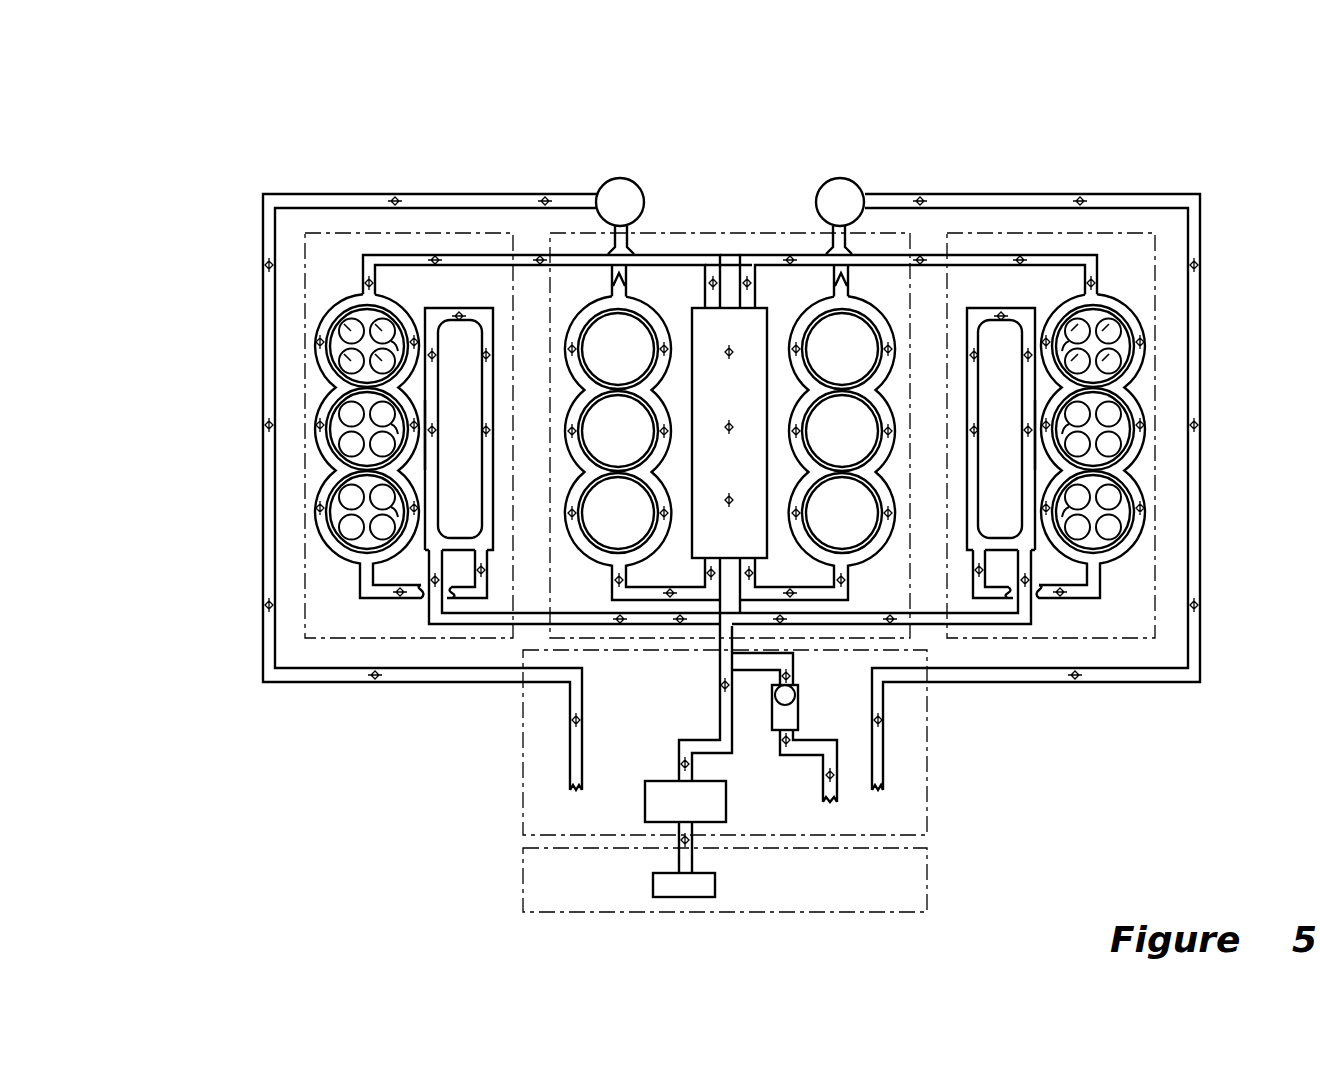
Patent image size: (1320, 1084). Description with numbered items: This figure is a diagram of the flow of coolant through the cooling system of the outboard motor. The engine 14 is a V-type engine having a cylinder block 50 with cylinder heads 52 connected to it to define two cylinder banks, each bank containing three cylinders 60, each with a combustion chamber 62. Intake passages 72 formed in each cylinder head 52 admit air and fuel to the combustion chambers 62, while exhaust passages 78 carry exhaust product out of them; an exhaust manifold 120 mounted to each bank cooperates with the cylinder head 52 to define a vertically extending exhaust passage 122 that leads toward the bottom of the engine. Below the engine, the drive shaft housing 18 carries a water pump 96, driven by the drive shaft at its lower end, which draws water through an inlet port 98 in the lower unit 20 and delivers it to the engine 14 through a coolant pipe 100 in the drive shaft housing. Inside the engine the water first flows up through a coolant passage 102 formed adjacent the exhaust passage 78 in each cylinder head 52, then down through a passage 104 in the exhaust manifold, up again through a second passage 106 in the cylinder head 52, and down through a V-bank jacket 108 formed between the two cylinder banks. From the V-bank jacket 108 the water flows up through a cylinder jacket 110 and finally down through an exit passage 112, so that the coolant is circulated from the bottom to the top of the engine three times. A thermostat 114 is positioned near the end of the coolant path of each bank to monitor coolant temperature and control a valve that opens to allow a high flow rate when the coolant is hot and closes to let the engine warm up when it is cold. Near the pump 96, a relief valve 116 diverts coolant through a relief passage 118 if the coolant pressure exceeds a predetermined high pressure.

The engine 14 is at (705, 233).
The drive shaft housing 18 is at (930, 790).
The lower unit 20 is at (930, 857).
The cylinder block 50 is at (740, 233).
The cylinder head 52 is at (320, 237).
The cylinder 60 is at (593, 337).
The combustion chamber 62 is at (320, 520).
The intake passage 72 is at (347, 363).
The exhaust passage 78 is at (388, 355).
The water pump 96 is at (655, 781).
The inlet port 98 is at (653, 880).
The coolant pipe 100 is at (719, 707).
The coolant passage 102 is at (425, 420).
The passage in the exhaust manifold 104 is at (493, 372).
The second passage 106 is at (320, 455).
The V-bank jacket 108 is at (755, 330).
The cylinder jacket 110 is at (578, 543).
The exit passage 112 is at (263, 295).
The thermostat 114 is at (620, 177).
The relief valve 116 is at (797, 697).
The relief passage 118 is at (803, 757).
The exhaust manifold 120 is at (463, 400).
The exhaust passage 122 is at (427, 552).